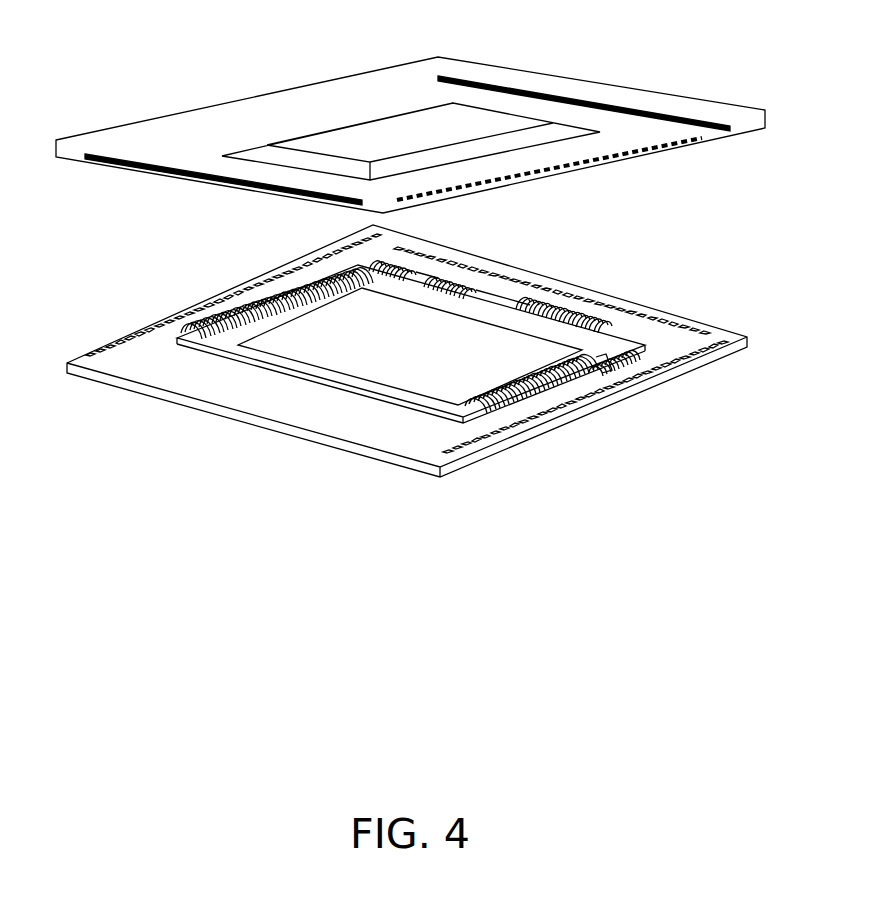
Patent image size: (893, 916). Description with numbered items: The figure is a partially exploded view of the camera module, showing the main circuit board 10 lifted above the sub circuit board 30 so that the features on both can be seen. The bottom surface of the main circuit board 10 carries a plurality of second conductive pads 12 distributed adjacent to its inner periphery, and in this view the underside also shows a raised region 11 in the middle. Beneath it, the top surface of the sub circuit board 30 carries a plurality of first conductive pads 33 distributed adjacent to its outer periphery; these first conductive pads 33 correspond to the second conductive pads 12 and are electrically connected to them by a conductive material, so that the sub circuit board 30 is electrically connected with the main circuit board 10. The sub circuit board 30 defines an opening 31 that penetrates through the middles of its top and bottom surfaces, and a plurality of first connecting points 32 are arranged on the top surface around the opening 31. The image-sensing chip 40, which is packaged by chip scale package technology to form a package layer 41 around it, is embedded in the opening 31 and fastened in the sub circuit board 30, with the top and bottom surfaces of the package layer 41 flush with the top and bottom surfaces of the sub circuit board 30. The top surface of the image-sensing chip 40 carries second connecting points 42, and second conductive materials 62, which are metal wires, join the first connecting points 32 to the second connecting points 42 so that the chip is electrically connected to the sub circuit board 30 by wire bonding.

The main circuit board 10 is at (222, 117).
The protrusion on upper substrate 11 is at (397, 133).
The second conductive pads 12 is at (637, 151).
The sub circuit board 30 is at (415, 384).
The opening 31 is at (522, 312).
The first connecting points 32 is at (540, 420).
The first conductive pads 33 is at (647, 318).
The image-sensing chip 40 is at (374, 367).
The package layer 41 is at (235, 287).
The second connecting points 42 is at (473, 412).
The second conductive materials 62 is at (598, 380).